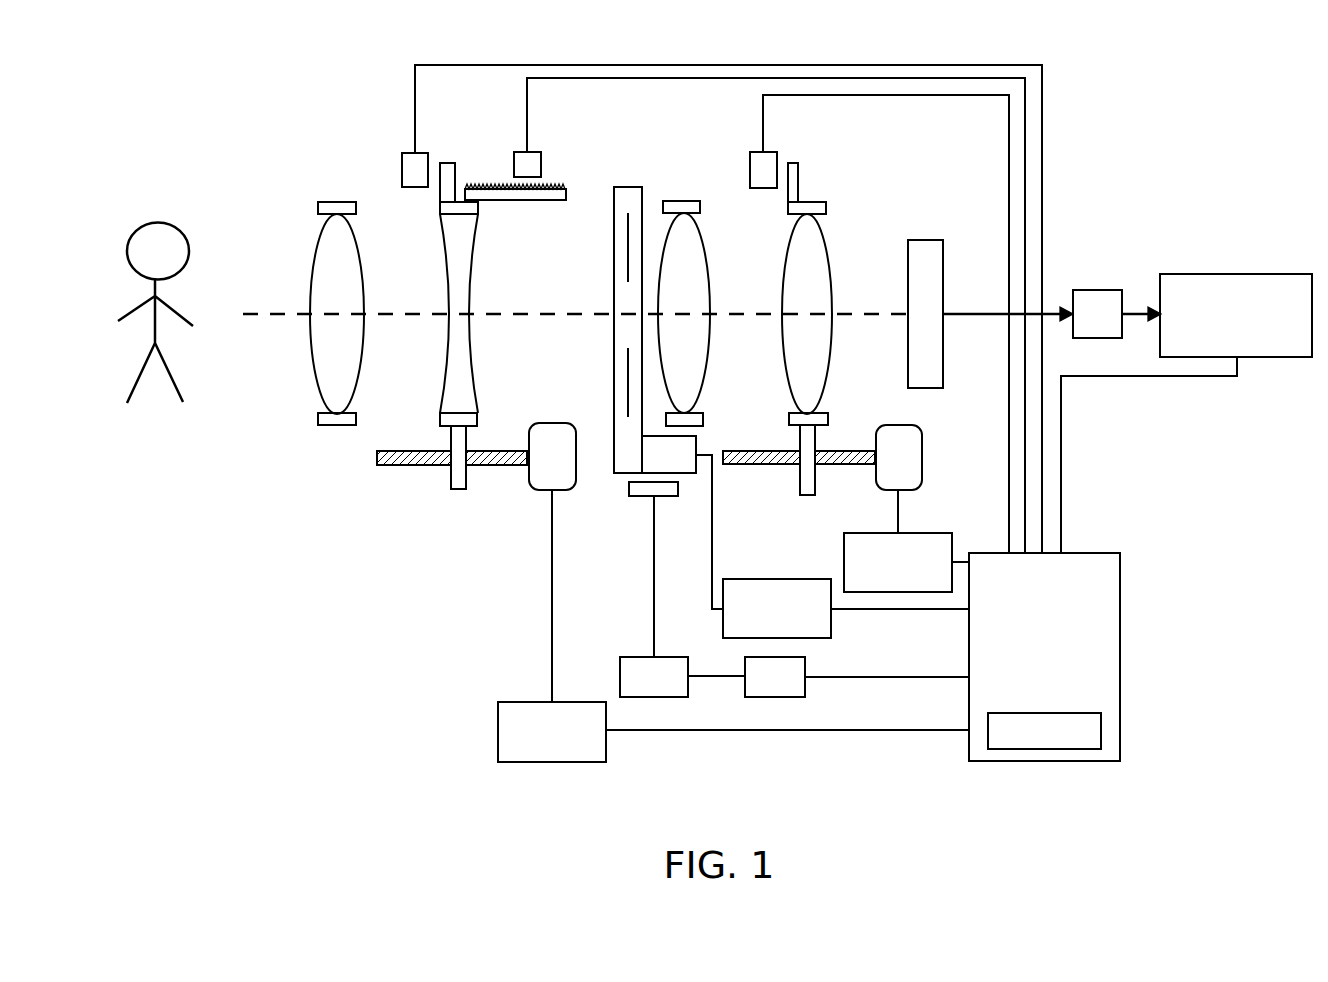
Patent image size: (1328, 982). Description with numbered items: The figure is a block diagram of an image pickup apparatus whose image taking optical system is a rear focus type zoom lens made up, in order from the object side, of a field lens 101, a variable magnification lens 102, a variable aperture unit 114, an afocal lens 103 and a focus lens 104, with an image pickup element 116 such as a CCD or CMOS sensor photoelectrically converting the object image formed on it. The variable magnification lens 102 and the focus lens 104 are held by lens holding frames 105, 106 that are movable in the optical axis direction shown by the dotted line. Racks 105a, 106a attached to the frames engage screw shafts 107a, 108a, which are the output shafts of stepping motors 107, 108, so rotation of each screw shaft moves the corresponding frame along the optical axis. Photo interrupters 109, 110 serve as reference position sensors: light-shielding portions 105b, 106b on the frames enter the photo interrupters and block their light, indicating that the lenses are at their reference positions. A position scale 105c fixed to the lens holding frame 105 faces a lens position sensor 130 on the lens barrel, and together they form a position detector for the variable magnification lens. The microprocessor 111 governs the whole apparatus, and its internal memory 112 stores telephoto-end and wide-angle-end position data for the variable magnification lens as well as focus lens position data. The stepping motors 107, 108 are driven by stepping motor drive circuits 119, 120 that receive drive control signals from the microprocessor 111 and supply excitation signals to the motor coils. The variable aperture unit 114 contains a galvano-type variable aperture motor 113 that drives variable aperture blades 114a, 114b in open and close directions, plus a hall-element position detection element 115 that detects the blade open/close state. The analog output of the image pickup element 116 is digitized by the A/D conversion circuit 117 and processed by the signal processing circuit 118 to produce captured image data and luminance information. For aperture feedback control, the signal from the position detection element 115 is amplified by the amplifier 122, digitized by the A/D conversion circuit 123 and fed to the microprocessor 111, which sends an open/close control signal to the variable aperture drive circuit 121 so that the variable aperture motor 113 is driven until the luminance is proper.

The field lens 101 is at (312, 254).
The variable magnification lens 102 is at (467, 280).
The afocal lens 103 is at (706, 253).
The focus lens 104 is at (830, 253).
The lens holding frame 105 is at (440, 206).
The rack 105a is at (451, 489).
The light-shielding portion 105b is at (447, 163).
The position scale 105c is at (518, 200).
The lens holding frame 106 is at (826, 207).
The rack 106a is at (800, 480).
The light-shielding portion 106b is at (798, 158).
The stepping motor 107 is at (529, 490).
The screw shaft 107a is at (377, 462).
The stepping motor 108 is at (922, 460).
The screw shaft 108a is at (757, 451).
The photo interrupter 109 is at (402, 172).
The photo interrupter 110 is at (750, 170).
The microprocessor 111 is at (1073, 553).
The internal memory 112 is at (1045, 713).
The variable aperture motor 113 is at (696, 437).
The variable aperture unit 114 is at (627, 187).
The variable aperture blade 114a is at (628, 247).
The variable aperture blade 114b is at (627, 385).
The position detection element 115 is at (629, 490).
The image pickup element 116 is at (925, 240).
The A/D conversion circuit 117 is at (1110, 290).
The signal processing circuit 118 is at (1268, 274).
The stepping motor drive circuit 119 is at (498, 715).
The stepping motor drive circuit 120 is at (844, 560).
The variable aperture drive circuit 121 is at (740, 579).
The amplifier 122 is at (620, 670).
The A/D conversion circuit 123 is at (810, 660).
The lens position sensor 130 is at (541, 160).